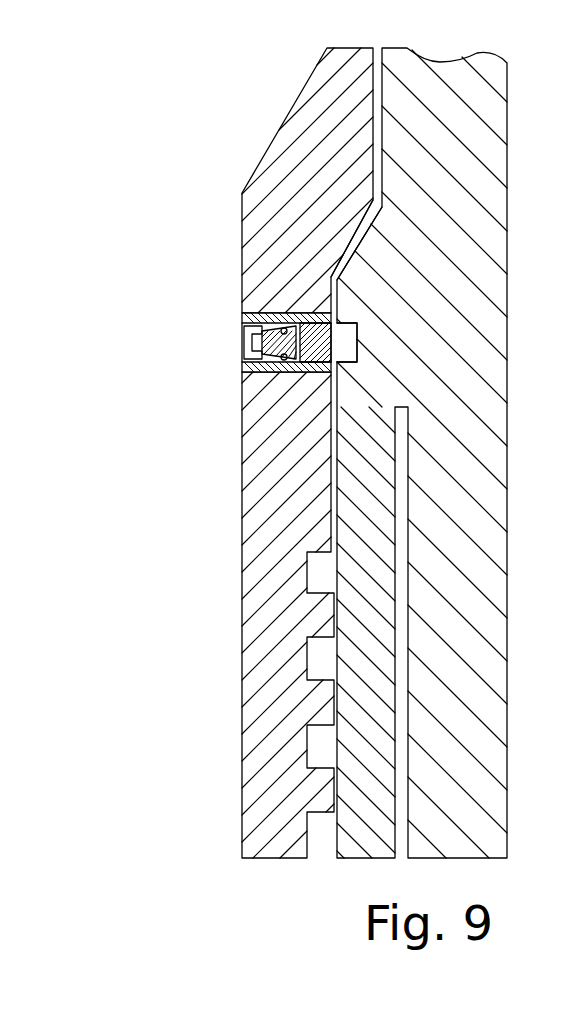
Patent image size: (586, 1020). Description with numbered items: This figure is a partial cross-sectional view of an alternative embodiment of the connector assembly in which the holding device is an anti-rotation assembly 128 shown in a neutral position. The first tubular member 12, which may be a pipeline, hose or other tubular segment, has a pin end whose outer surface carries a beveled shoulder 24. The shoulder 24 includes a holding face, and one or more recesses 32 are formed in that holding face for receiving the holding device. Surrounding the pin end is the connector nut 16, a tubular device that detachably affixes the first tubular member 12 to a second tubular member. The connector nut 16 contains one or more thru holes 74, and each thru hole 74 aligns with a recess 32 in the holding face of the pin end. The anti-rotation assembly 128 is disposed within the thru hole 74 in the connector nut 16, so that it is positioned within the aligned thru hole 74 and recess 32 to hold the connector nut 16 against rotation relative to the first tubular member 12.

The first tubular member 12 is at (470, 128).
The connector nut 16 is at (290, 160).
The beveled shoulder 24 is at (352, 257).
The recess 32 is at (357, 346).
The thru hole 74 is at (250, 342).
The anti-rotation assembly 128 is at (212, 325).